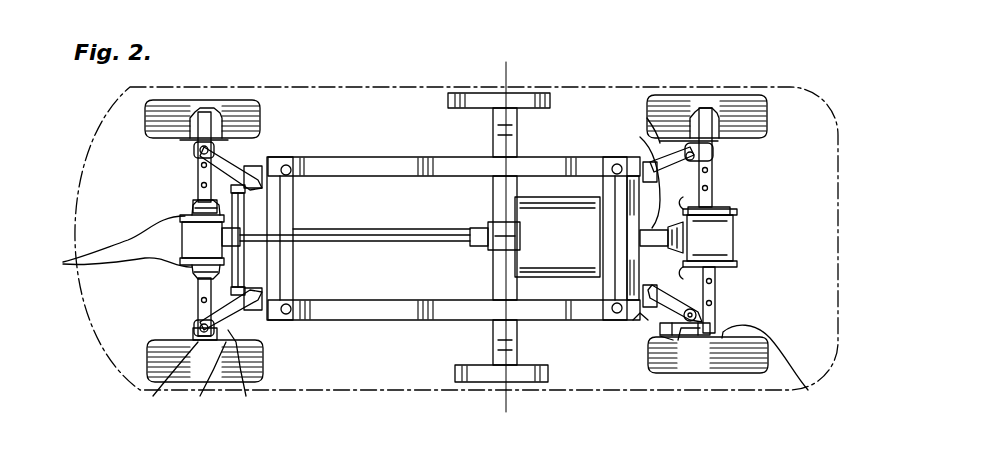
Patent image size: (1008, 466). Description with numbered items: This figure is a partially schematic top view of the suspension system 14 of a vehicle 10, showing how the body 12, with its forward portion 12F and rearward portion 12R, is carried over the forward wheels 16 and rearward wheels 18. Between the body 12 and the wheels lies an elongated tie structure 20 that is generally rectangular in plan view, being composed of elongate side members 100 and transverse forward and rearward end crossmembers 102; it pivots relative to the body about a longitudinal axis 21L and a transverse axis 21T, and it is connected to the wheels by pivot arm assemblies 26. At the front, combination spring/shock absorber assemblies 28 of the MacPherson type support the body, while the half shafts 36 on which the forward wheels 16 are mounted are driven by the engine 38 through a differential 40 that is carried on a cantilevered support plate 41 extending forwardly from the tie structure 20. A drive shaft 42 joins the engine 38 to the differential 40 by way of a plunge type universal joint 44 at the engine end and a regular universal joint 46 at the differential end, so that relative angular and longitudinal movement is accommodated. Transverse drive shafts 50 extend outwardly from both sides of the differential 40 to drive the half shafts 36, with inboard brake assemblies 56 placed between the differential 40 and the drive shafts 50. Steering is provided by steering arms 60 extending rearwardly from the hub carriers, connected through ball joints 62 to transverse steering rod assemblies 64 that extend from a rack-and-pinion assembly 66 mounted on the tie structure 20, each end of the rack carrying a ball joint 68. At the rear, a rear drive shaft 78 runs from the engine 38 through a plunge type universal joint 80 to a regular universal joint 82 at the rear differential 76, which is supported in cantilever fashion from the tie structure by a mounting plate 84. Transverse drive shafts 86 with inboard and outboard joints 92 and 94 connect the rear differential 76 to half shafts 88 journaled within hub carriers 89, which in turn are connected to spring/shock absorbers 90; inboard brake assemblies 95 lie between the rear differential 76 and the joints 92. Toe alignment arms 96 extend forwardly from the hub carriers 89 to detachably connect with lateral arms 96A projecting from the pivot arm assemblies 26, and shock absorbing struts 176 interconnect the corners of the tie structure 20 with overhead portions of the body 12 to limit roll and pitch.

The vehicle 10 is at (125, 100).
The body 12 is at (378, 84).
The forward portion of the body 12F is at (75, 200).
The rearward portion of the body 12R is at (838, 272).
The suspension system 14 is at (288, 125).
The forward wheels 16 is at (165, 360).
The rearward wheels 18 is at (745, 362).
The tie structure 20 is at (390, 328).
The transverse axis 21T is at (509, 86).
The longitudinal axis 21L is at (444, 248).
The pivot arm assemblies 26 is at (266, 332).
The spring/shock absorber assemblies 28 is at (153, 396).
The half shafts 36 is at (213, 118).
The engine and transmission assembly 38 is at (575, 246).
The differential 40 is at (210, 239).
The cantilevered support plate 41 is at (296, 254).
The drive shaft 42 is at (360, 233).
The plunge type universal joint 44 is at (475, 228).
The regular universal joint 46 is at (246, 206).
The transverse drive shafts 50 is at (197, 182).
The inboard brake assemblies 56 is at (70, 262).
The steering arms 60 is at (200, 396).
The ball joints 62 is at (246, 396).
The steering rod assemblies 64 is at (262, 162).
The rack-and-pinion assembly 66 is at (208, 278).
The ball joint 68 is at (270, 190).
The rear differential 76 is at (733, 225).
The rear drive shaft 78 is at (678, 248).
The plunge type universal joint 80 is at (603, 312).
The regular universal joint 82 is at (667, 182).
The mounting plate 84 is at (662, 148).
The transverse drive shafts 86 is at (710, 290).
The half shafts 88 is at (724, 110).
The hub carriers 89 is at (753, 138).
The spring/shock absorbers 90 is at (743, 360).
The constant velocity and/or universal joints 92 is at (712, 280).
The constant velocity and/or universal joints 94 is at (711, 310).
The inboard brake assemblies 95 is at (734, 206).
The toe alignment arms 96 is at (680, 118).
The lateral arms 96A is at (647, 118).
The side members 100 is at (382, 157).
The end crossmembers 102 is at (606, 168).
The shock absorbing struts 176 is at (638, 314).